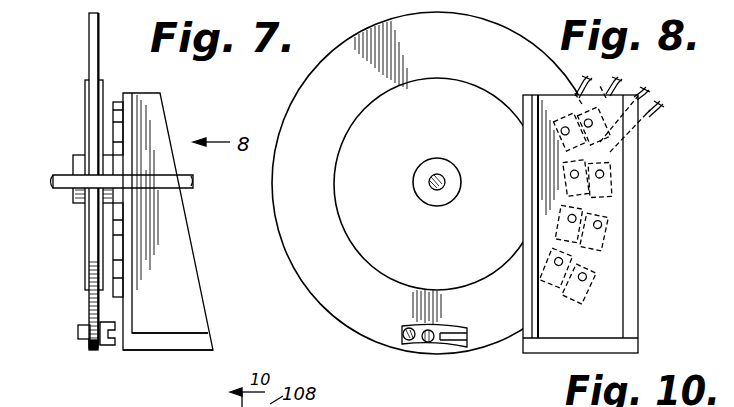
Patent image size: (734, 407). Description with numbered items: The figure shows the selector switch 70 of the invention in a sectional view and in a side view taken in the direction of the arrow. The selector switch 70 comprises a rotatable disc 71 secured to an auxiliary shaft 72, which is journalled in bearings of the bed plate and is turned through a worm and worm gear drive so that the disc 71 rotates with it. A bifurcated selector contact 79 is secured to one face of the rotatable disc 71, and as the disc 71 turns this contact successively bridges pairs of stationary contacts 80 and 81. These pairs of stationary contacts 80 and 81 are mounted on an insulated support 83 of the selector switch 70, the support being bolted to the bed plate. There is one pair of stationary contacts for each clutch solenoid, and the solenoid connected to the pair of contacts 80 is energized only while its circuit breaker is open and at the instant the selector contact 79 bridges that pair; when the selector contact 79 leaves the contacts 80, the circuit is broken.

In FIG. 7, the selector switch 70 is at (180, 269).
In FIG. 8, the selector switch 70 is at (617, 257).
In FIG. 7, the rotatable disc 71 is at (93, 304).
In FIG. 8, the rotatable disc 71 is at (376, 314).
In FIG. 7, the auxiliary shaft 72 is at (193, 187).
In FIG. 8, the auxiliary shaft 72 is at (436, 190).
In FIG. 7, the bifurcated selector contact 79 is at (109, 346).
In FIG. 8, the bifurcated selector contact 79 is at (440, 330).
In FIG. 7, the stationary contacts 80 is at (118, 122).
In FIG. 8, the stationary contacts 80 is at (628, 92).
In FIG. 7, the stationary contacts 81 is at (120, 160).
In FIG. 8, the stationary contacts 81 is at (607, 185).
In FIG. 7, the insulated support 83 is at (195, 302).
In FIG. 8, the insulated support 83 is at (623, 301).